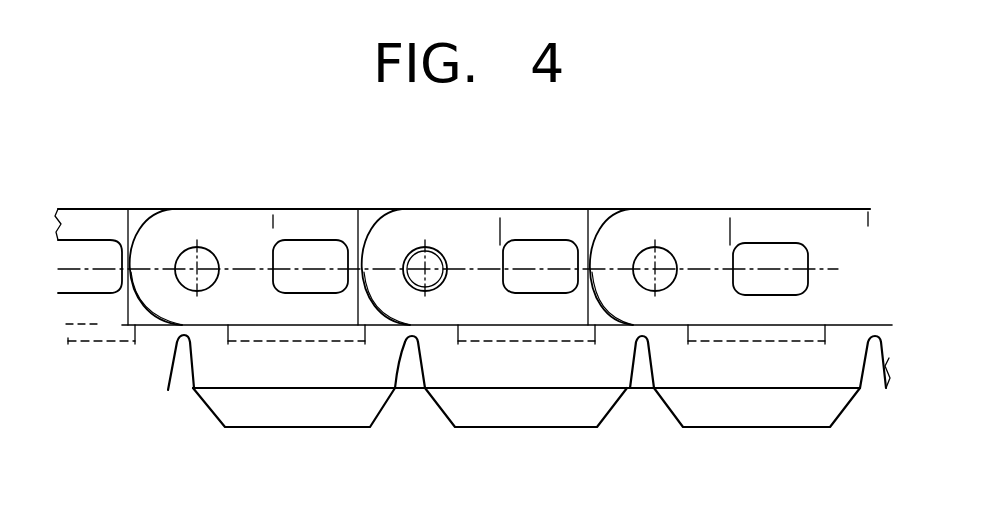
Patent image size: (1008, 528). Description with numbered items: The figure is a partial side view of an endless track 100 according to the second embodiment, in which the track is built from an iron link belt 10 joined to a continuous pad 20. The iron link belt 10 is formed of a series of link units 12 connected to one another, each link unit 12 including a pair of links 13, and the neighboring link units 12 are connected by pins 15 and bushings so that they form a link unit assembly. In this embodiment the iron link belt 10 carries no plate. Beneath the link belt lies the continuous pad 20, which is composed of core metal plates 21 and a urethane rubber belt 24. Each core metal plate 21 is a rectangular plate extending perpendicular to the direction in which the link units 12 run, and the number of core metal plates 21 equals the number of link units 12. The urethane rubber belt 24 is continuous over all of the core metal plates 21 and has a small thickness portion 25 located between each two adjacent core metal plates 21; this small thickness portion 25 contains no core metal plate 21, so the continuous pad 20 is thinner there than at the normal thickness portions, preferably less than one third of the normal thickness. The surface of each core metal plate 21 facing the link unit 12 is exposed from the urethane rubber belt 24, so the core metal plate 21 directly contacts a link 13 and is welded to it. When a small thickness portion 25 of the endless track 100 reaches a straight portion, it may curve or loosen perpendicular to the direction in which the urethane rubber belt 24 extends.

The iron link belt 10 is at (488, 224).
The link unit 12 is at (257, 225).
The link 13 is at (235, 225).
The pin 15 is at (187, 248).
The endless track 100 is at (620, 209).
The continuous pad 20 is at (496, 409).
The core metal plate 21 is at (228, 340).
The urethane rubber belt 24 is at (507, 410).
The small thickness portion 25 is at (173, 350).